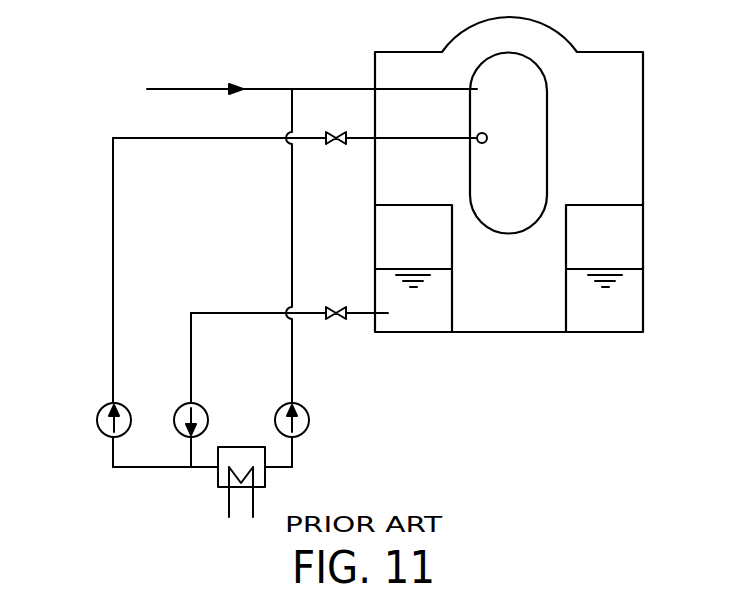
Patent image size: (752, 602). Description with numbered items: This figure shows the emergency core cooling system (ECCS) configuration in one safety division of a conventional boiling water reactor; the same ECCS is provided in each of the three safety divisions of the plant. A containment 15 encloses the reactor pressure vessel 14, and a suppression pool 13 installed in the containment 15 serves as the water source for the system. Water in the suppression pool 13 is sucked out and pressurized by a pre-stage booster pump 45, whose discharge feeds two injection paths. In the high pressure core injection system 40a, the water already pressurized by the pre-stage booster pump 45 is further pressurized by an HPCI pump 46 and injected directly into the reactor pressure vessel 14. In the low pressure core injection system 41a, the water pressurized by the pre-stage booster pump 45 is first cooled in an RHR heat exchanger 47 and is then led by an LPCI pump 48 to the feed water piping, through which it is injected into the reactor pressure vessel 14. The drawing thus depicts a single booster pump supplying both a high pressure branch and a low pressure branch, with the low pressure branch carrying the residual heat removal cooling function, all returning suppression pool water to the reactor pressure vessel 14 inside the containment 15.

The suppression pool 13 is at (378, 282).
The reactor pressure vessel 14 is at (547, 177).
The containment 15 is at (643, 122).
The high pressure core injection system 40a is at (113, 271).
The low pressure core injection system 41a is at (291, 207).
The pre-stage booster pump 45 is at (180, 406).
The HPCI pump 46 is at (97, 420).
The RHR heat exchanger 47 is at (265, 477).
The LPCI pump 48 is at (309, 420).